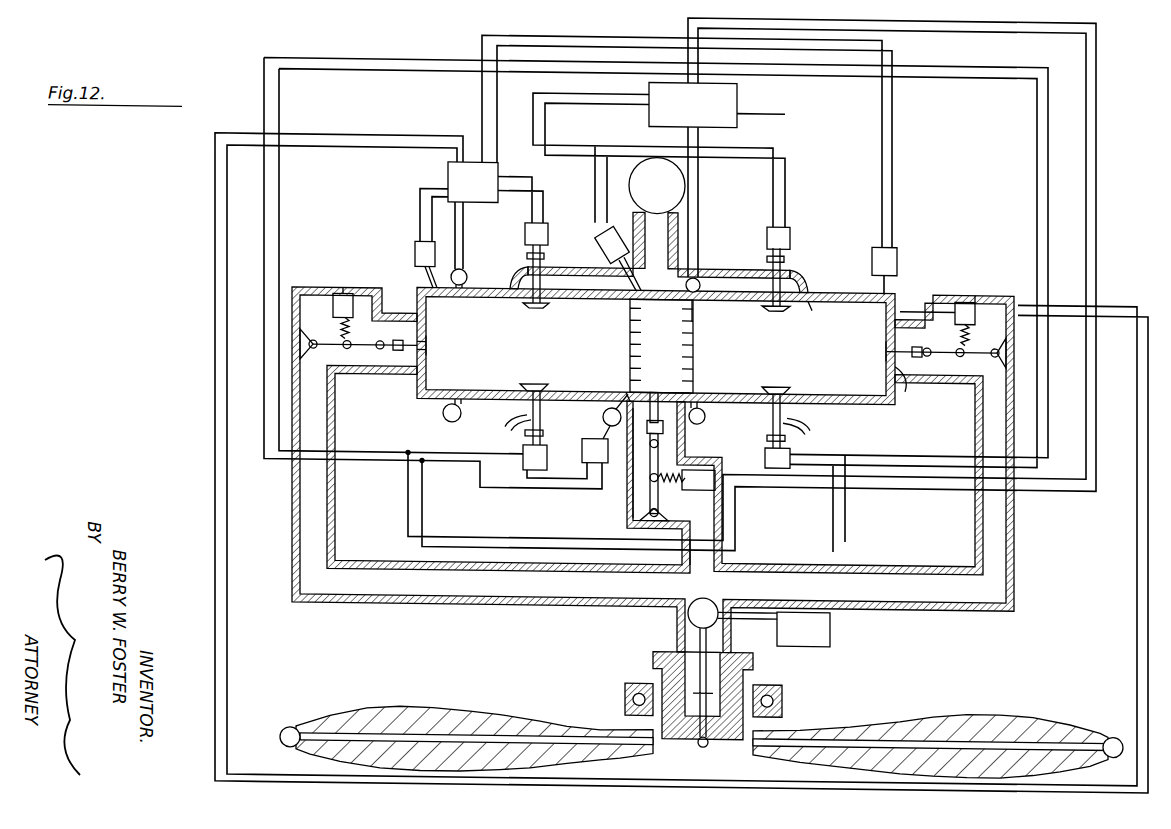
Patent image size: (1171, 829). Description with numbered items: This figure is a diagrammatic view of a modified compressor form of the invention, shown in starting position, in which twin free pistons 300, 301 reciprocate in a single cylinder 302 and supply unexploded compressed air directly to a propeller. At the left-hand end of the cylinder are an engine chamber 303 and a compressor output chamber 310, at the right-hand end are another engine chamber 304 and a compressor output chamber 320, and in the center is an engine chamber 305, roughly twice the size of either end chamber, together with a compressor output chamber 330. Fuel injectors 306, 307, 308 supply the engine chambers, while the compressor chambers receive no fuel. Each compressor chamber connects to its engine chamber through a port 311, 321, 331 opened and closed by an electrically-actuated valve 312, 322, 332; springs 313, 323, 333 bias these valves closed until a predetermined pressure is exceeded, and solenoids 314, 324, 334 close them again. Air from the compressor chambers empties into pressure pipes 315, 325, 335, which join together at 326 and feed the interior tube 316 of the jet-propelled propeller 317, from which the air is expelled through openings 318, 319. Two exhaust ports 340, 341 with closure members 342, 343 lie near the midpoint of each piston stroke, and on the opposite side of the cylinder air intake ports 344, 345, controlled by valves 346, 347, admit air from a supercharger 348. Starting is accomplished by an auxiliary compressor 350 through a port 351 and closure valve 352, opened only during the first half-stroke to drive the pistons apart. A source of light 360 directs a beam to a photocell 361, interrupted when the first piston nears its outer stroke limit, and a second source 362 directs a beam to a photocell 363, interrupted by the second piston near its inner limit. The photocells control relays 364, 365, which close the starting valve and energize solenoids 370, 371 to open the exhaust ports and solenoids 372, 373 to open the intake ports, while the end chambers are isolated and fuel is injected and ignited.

The free piston 300 is at (656, 345).
The free piston 301 is at (692, 313).
The cylinder 302 is at (810, 300).
The engine chamber 303 is at (448, 354).
The engine chamber 304 is at (862, 360).
The engine chamber 305 is at (661, 346).
The fuel injector 306 is at (415, 248).
The fuel injector 307 is at (897, 245).
The fuel injector 308 is at (600, 238).
The compressor output chamber 310 is at (375, 372).
The port 311 is at (410, 338).
The electrically-actuated valve 312 is at (426, 325).
The spring 313 is at (332, 282).
The solenoid 314 is at (352, 292).
The pressure pipe 315 is at (300, 505).
The interior tube 316 is at (535, 729).
The jet-propelled propeller 317 is at (445, 700).
The opening 318 is at (288, 722).
The opening 319 is at (1112, 723).
The compressor output chamber 320 is at (945, 375).
The port 321 is at (887, 340).
The electrically-actuated valve 322 is at (905, 380).
The spring 323 is at (960, 290).
The solenoid 324 is at (975, 283).
The pressure pipe 325 is at (1014, 518).
The pipe junction 326 is at (677, 590).
The compressor output chamber 330 is at (677, 435).
The port 331 is at (690, 380).
The electrically-actuated valve 332 is at (628, 382).
The spring 333 is at (665, 478).
The solenoid 334 is at (715, 470).
The pressure pipe 335 is at (722, 520).
The exhaust port 340 is at (522, 410).
The exhaust port 341 is at (800, 415).
The closure member 342 is at (529, 404).
The closure member 343 is at (780, 378).
The air intake port 344 is at (512, 303).
The air intake port 345 is at (805, 270).
The intake valve 346 is at (540, 305).
The intake valve 347 is at (770, 305).
The supercharger 348 is at (659, 217).
The auxiliary compressor 350 is at (605, 456).
The port 351 is at (655, 390).
The closure valve 352 is at (603, 412).
The source of light 360 is at (443, 410).
The photocell 361 is at (462, 266).
The source of light 362 is at (705, 407).
The photocell 363 is at (695, 270).
The relay 364 is at (473, 182).
The relay 365 is at (693, 104).
The solenoid 370 is at (547, 448).
The solenoid 371 is at (790, 445).
The solenoid 372 is at (535, 222).
The solenoid 373 is at (790, 226).